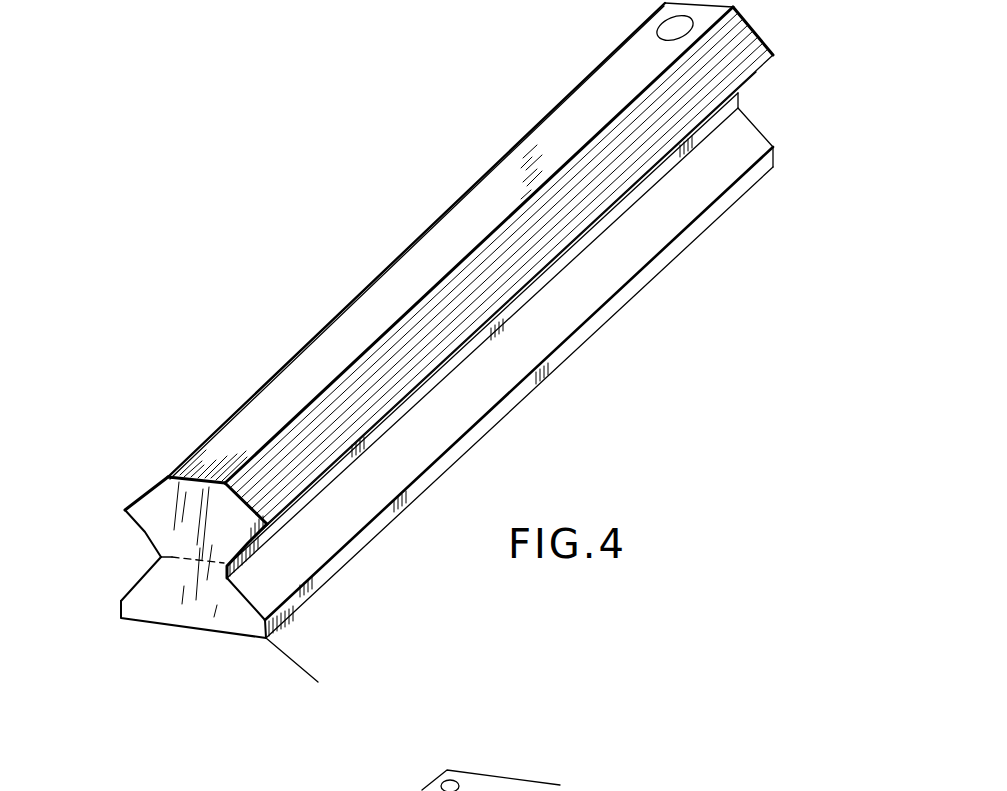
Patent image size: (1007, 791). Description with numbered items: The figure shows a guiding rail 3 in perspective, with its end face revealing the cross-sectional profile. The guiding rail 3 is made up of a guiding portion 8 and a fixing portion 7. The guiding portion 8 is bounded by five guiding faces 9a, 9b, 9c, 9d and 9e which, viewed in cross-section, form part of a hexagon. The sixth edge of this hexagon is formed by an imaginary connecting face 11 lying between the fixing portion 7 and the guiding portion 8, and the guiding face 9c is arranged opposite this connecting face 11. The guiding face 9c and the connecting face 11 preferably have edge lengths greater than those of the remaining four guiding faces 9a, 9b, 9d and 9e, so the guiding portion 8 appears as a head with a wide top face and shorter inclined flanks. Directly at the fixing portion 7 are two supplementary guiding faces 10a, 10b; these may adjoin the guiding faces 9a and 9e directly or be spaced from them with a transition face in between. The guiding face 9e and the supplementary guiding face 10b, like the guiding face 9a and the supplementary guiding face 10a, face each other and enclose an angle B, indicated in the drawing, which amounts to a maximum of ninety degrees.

The guiding rail 3 is at (500, 178).
The fixing portion 7 is at (182, 618).
The guiding portion 8 is at (155, 499).
The guiding face 9a is at (145, 532).
The guiding face 9b is at (192, 450).
The guiding face 9c is at (303, 368).
The guiding face 9d is at (347, 407).
The guiding face 9e is at (253, 540).
The supplementary guiding face 10a is at (140, 583).
The supplementary guiding face 10b is at (443, 442).
The imaginary connecting face 11 is at (167, 560).
The angle β B is at (322, 485).